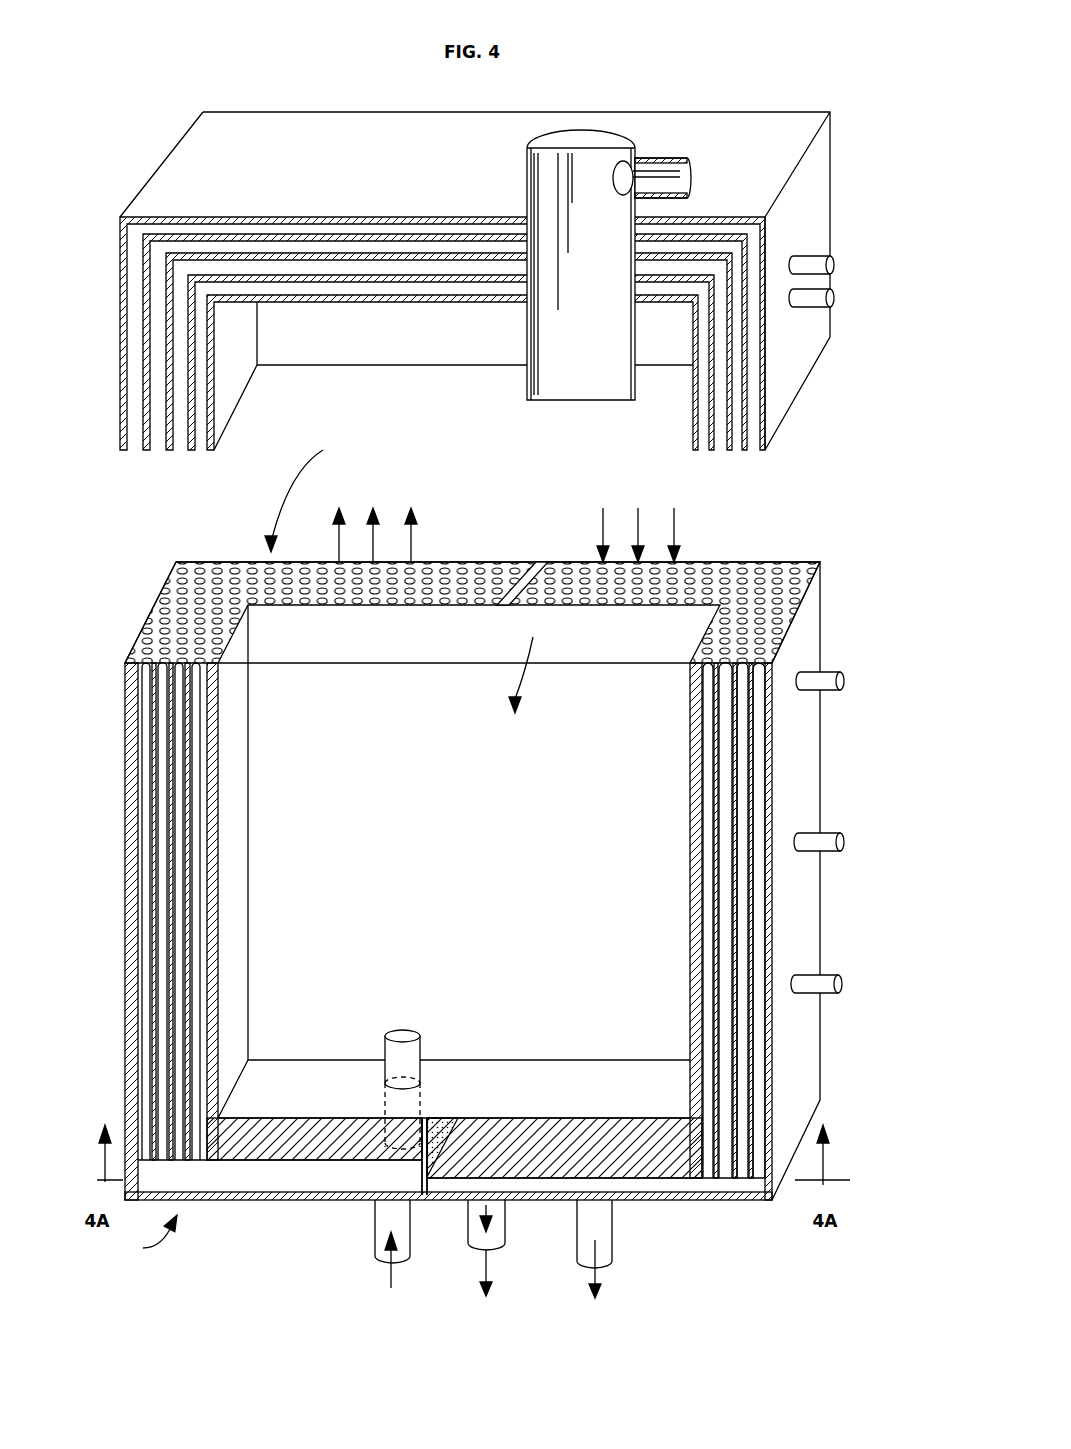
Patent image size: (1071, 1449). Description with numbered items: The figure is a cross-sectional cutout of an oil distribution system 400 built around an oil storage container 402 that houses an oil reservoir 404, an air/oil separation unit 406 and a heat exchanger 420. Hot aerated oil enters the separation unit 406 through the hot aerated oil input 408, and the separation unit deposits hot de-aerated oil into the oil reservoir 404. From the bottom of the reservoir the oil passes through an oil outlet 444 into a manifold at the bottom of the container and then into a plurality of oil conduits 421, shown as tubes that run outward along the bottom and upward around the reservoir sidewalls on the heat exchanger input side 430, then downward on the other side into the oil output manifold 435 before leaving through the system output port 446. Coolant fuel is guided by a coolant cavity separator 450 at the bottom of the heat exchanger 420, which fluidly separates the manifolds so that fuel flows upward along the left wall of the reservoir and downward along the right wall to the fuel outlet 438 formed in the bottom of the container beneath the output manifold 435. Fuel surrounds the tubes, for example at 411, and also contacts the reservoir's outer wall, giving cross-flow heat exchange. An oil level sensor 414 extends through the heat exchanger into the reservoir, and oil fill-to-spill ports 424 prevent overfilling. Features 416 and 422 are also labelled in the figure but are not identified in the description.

The oil distribution system 400 is at (790, 49).
The oil storage container 402 is at (320, 176).
The oil reservoir 404 is at (398, 349).
The air/oil separation unit 406 is at (580, 147).
The hot aerated oil input 408 is at (669, 130).
The conduit-surrounding coolant region 411 is at (210, 452).
The oil level sensor 414 is at (842, 680).
The fuel inlet 416 is at (382, 1226).
The heat exchanger 420 is at (311, 491).
The oil conduits 421 is at (463, 568).
The downward oil flow 422 is at (533, 668).
The oil fill-to-spill ports 424 is at (833, 298).
The heat exchanger input side 430 is at (265, 1208).
The oil output manifold 435 is at (690, 1185).
The fuel outlet 438 is at (604, 1228).
The oil outlet 444 is at (412, 1030).
The system output port 446 is at (505, 1228).
The coolant cavity separator 450 is at (537, 562).